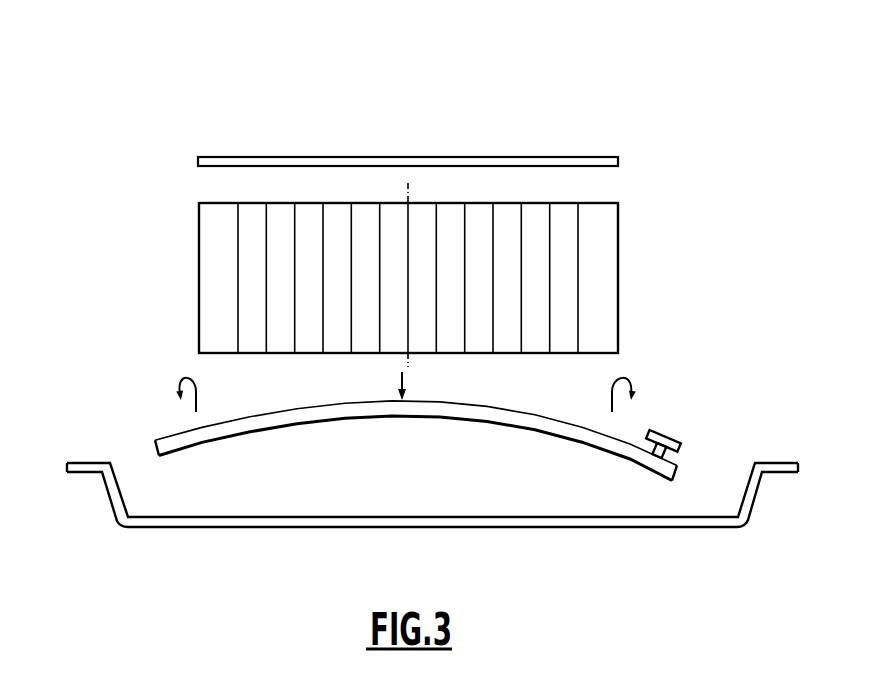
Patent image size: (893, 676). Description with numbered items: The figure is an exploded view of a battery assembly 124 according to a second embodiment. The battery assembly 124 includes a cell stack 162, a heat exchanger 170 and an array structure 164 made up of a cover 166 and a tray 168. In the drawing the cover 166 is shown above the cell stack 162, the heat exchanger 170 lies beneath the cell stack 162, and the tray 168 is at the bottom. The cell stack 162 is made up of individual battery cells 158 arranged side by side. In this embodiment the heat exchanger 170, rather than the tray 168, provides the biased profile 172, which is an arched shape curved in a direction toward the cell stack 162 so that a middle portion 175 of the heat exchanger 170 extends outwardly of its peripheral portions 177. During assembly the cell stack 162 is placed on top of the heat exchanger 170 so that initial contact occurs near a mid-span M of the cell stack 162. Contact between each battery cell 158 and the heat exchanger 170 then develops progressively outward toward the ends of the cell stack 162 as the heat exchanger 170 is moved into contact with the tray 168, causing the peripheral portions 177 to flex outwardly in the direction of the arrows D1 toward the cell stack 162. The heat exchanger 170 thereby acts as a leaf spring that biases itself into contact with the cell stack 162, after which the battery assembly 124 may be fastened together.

The battery assembly 124 is at (452, 117).
The array structure 164 is at (636, 157).
The cover 166 is at (527, 165).
The cell stack 162 is at (173, 239).
The battery cell 158 is at (307, 218).
The mid-span M is at (410, 367).
The arrows D1 is at (205, 393).
The biased profile 172 is at (160, 413).
The middle portion 175 is at (413, 407).
The peripheral portions 177 is at (186, 440).
The heat exchanger 170 is at (639, 434).
The tray 168 is at (453, 527).